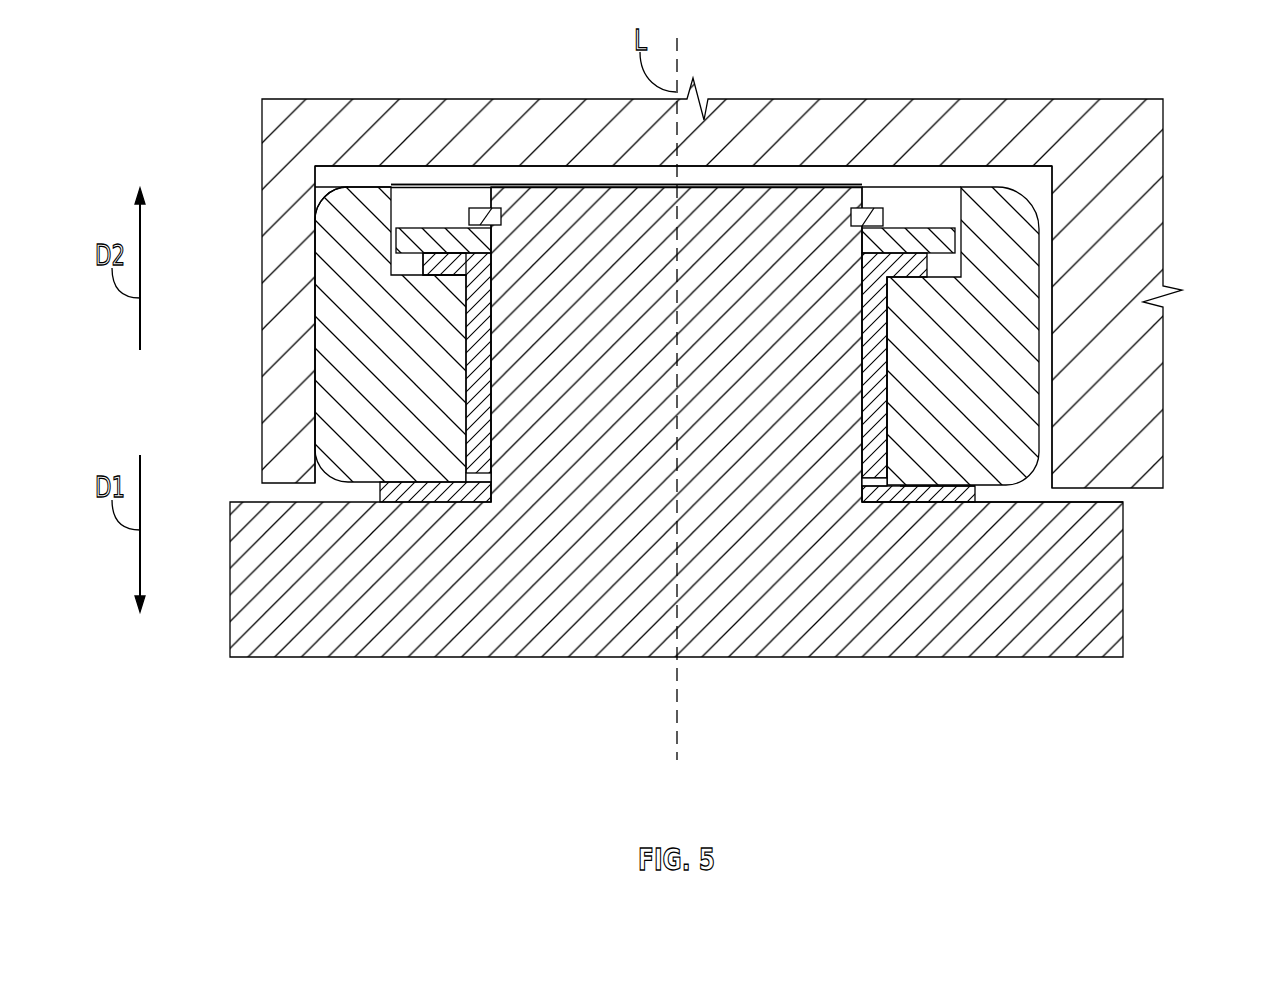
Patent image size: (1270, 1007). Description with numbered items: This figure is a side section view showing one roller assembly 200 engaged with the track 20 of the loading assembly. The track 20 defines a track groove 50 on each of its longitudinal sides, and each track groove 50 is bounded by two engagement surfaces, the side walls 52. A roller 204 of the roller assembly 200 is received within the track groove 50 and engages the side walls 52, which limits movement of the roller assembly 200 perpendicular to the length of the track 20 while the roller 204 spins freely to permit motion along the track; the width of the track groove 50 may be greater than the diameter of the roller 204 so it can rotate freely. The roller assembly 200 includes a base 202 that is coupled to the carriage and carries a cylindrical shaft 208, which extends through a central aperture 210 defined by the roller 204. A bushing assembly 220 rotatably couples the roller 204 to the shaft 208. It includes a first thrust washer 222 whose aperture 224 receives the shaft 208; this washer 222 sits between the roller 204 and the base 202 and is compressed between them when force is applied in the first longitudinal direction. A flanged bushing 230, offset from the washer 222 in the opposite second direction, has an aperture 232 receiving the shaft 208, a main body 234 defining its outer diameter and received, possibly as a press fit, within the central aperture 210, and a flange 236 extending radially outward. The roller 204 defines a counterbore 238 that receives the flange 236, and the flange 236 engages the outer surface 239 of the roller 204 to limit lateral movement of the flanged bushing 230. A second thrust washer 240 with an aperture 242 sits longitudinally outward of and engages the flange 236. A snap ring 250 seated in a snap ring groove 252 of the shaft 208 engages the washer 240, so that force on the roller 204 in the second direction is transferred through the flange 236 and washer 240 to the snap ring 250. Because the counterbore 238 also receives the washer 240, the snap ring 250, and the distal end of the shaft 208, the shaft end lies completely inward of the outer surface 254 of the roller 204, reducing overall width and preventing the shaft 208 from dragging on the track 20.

The track 20 is at (942, 122).
The track groove 50 is at (1030, 184).
The side wall 52 is at (313, 205).
The roller assembly 200 is at (226, 695).
The base 202 is at (1097, 573).
The roller 204 is at (1022, 413).
The shaft 208 is at (708, 228).
The central aperture 210 is at (886, 408).
The bushing assembly 220 is at (947, 528).
The washer 222 is at (923, 498).
The aperture 224 is at (862, 493).
The flanged bushing 230 is at (476, 378).
The aperture 232 is at (493, 310).
The main body 234 is at (480, 422).
The flange 236 is at (449, 266).
The counterbore 238 is at (907, 199).
The outer surface 239 is at (313, 203).
The washer 240 is at (412, 236).
The aperture 242 is at (492, 240).
The snap ring 250 is at (491, 195).
The snap ring groove 252 is at (502, 217).
The outer surface 254 is at (377, 183).